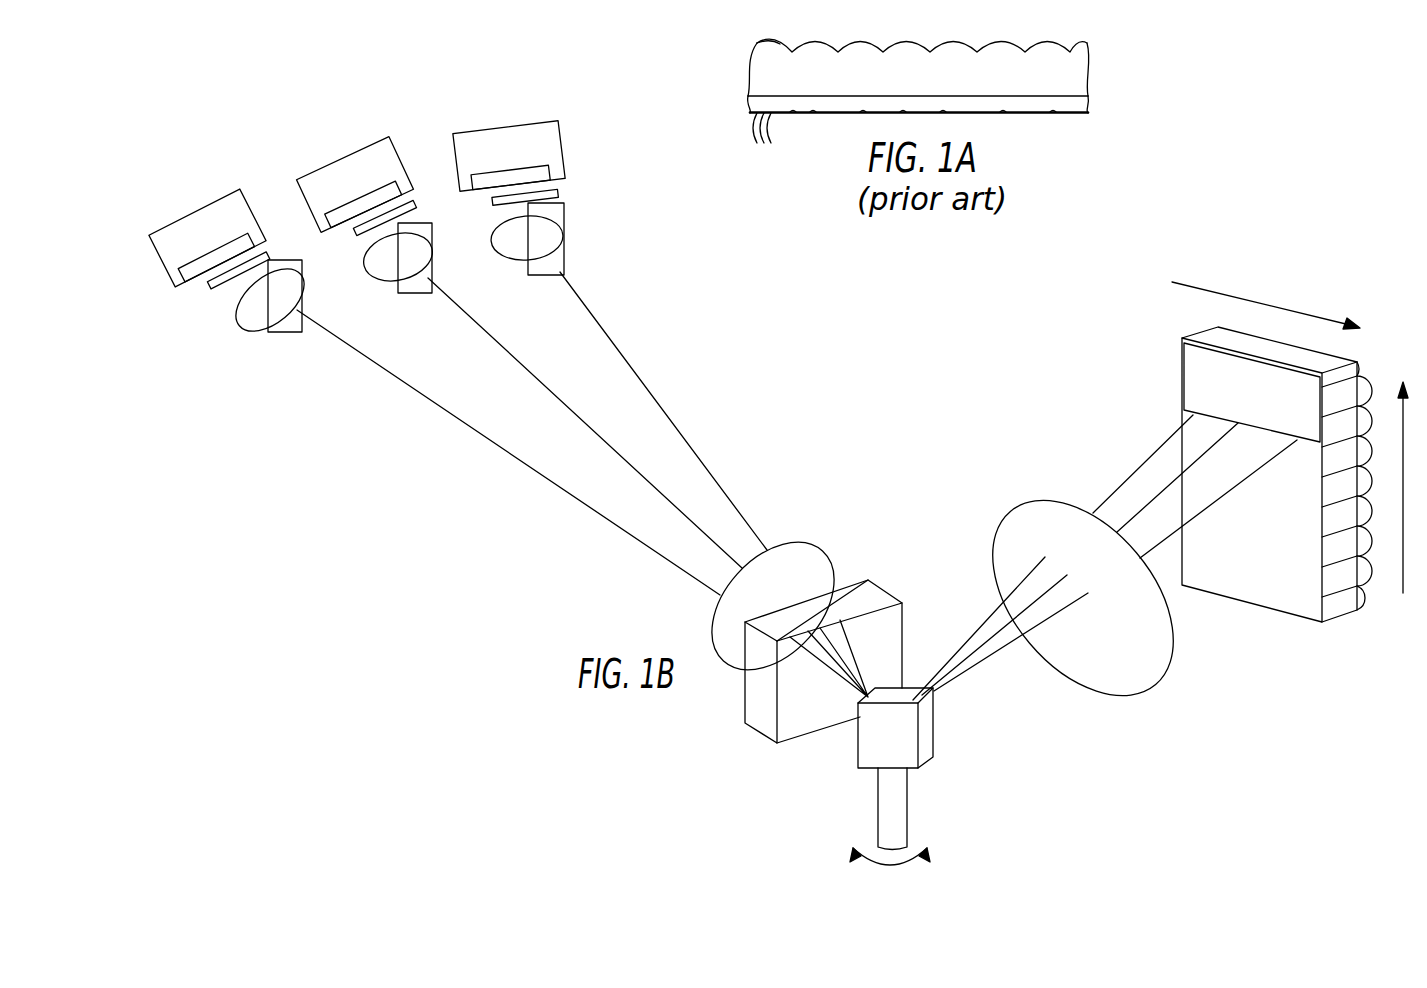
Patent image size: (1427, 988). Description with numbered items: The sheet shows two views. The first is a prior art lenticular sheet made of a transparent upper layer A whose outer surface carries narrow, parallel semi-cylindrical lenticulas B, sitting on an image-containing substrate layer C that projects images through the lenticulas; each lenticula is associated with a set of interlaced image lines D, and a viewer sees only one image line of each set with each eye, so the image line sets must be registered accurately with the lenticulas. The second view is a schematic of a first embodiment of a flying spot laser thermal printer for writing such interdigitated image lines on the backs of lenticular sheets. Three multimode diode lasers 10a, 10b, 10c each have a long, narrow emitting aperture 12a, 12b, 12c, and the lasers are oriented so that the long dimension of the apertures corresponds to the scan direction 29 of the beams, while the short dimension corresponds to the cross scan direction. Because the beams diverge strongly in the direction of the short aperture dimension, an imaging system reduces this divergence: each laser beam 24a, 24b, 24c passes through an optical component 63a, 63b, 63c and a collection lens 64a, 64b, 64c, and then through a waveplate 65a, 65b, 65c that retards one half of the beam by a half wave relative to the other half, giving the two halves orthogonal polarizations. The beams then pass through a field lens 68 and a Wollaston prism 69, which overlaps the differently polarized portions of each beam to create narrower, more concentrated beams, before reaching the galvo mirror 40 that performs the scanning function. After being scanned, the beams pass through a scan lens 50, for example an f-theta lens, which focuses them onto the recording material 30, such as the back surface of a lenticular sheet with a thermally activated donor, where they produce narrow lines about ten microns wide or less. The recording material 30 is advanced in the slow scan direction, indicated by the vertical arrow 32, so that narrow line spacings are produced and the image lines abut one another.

In FIG. 1A, the transparent upper layer A is at (1110, 38).
In FIG. 1A, the lenticulas B is at (768, 45).
In FIG. 1A, the image-containing substrate layer C is at (1110, 93).
In FIG. 1A, the image lines D is at (754, 139).
In FIG. 1B, the multimode diode laser 10a is at (165, 228).
In FIG. 1B, the multimode diode laser 10b is at (305, 176).
In FIG. 1B, the multimode diode laser 10c is at (470, 132).
In FIG. 1B, the emitting aperture 12a is at (220, 250).
In FIG. 1B, the emitting aperture 12b is at (362, 180).
In FIG. 1B, the emitting aperture 12c is at (528, 170).
In FIG. 1B, the optical component 63a is at (210, 287).
In FIG. 1B, the optical component 63b is at (352, 236).
In FIG. 1B, the optical component 63c is at (556, 188).
In FIG. 1B, the collection lens 64a is at (252, 331).
In FIG. 1B, the collection lens 64b is at (383, 283).
In FIG. 1B, the collection lens 64c is at (515, 262).
In FIG. 1B, the waveplate 65a is at (293, 333).
In FIG. 1B, the waveplate 65b is at (428, 294).
In FIG. 1B, the waveplate 65c is at (550, 276).
In FIG. 1B, the laser beam 24a is at (605, 523).
In FIG. 1B, the laser beam 24b is at (678, 510).
In FIG. 1B, the laser beam 24c is at (703, 458).
In FIG. 1B, the field lens 68 is at (805, 545).
In FIG. 1B, the Wollaston prism 69 is at (752, 732).
In FIG. 1B, the galvo mirror 40 is at (858, 757).
In FIG. 1B, the scan lens 50 is at (1005, 505).
In FIG. 1B, the recording material 30 is at (1250, 603).
In FIG. 1B, the scan direction 29 is at (1305, 316).
In FIG. 1B, the vertical arrow 32 is at (1403, 597).